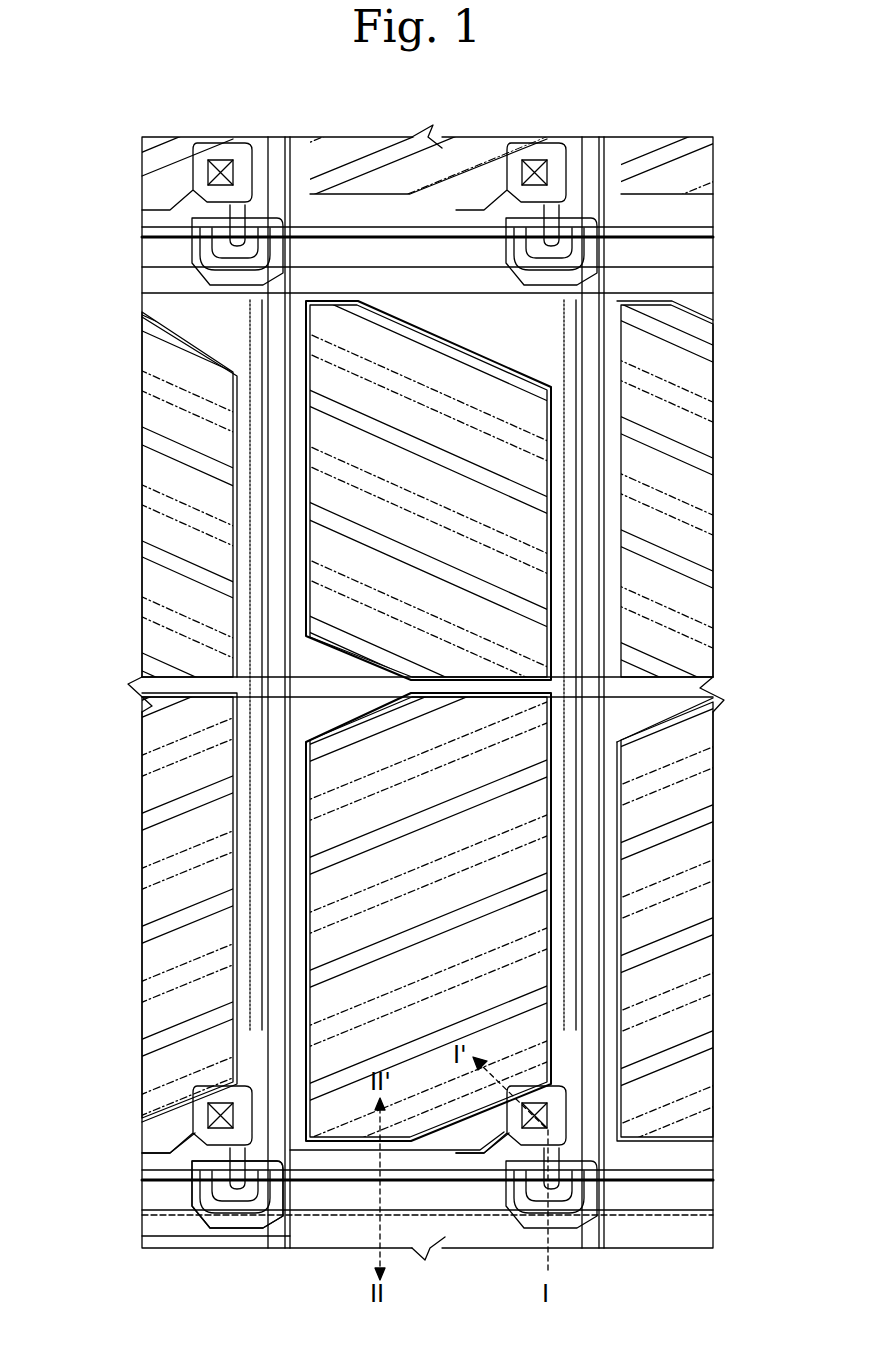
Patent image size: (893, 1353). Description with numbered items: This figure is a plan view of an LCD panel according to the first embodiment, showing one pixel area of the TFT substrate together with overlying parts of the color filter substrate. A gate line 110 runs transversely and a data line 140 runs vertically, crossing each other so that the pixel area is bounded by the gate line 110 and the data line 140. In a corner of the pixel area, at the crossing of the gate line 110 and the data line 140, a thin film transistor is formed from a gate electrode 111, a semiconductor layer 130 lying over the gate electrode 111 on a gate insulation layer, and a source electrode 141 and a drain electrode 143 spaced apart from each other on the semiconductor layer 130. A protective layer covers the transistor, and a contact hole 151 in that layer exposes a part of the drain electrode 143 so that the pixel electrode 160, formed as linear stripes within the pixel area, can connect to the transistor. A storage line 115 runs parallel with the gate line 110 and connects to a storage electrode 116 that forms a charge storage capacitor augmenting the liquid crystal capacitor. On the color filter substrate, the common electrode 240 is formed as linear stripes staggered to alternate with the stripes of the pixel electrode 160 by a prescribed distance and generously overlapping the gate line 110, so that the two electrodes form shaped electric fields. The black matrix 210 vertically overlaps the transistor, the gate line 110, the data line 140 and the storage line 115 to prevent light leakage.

The gate line 110 is at (305, 1203).
The gate electrode 111 is at (525, 1162).
The storage line 115 is at (155, 688).
The storage electrode 116 is at (300, 762).
The semiconductor layer 130 is at (572, 1195).
The data line 140 is at (277, 1237).
The source electrode 141 is at (540, 1217).
The drain electrode 143 is at (600, 1187).
The contact hole 151 is at (543, 1107).
The pixel electrode 160 is at (343, 1162).
The black matrix 210 is at (427, 1130).
The common electrode 240 is at (547, 1047).